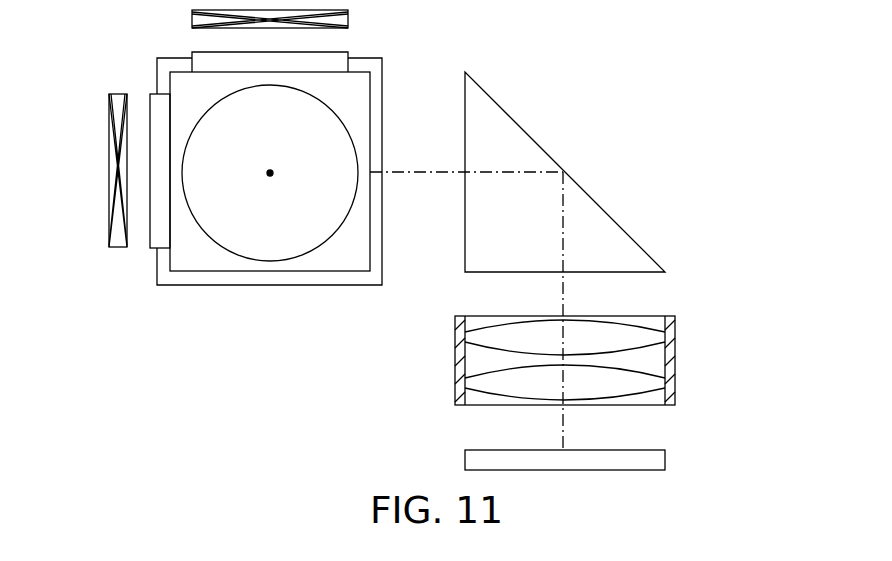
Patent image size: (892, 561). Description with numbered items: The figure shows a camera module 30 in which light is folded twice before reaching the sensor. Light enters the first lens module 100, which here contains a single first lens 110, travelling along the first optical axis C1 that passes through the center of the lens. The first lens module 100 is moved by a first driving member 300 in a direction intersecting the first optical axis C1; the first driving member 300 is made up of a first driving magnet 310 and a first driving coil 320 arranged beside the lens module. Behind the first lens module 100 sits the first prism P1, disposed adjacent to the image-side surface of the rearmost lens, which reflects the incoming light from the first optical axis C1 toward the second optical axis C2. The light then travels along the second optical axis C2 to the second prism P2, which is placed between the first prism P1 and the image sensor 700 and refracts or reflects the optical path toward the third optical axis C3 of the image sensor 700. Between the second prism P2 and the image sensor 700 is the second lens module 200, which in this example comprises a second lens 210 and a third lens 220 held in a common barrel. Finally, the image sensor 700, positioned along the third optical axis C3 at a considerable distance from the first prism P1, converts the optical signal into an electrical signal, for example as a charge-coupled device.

The first lens module 100 is at (362, 80).
The first lens 110 is at (270, 261).
The first prism P1 is at (345, 278).
The first optical axis C1 is at (269, 158).
The first driving member 300 is at (198, 345).
The first driving magnet 310 is at (160, 240).
The first driving coil 320 is at (117, 240).
The second optical axis C2 is at (425, 173).
The second prism P2 is at (518, 150).
The camera module 30 is at (628, 123).
The second lens module 200 is at (747, 320).
The second lens 210 is at (657, 337).
The third lens 220 is at (657, 382).
The third optical axis C3 is at (563, 426).
The image sensor 700 is at (665, 453).